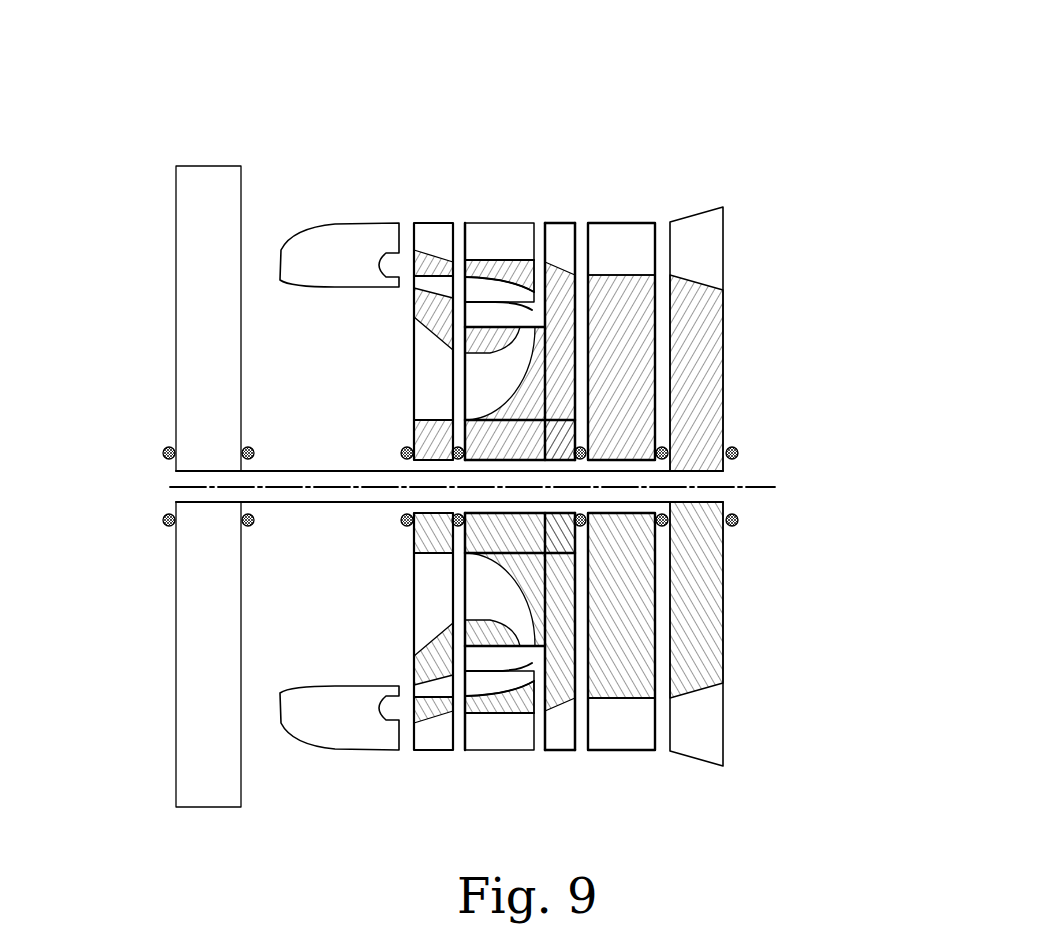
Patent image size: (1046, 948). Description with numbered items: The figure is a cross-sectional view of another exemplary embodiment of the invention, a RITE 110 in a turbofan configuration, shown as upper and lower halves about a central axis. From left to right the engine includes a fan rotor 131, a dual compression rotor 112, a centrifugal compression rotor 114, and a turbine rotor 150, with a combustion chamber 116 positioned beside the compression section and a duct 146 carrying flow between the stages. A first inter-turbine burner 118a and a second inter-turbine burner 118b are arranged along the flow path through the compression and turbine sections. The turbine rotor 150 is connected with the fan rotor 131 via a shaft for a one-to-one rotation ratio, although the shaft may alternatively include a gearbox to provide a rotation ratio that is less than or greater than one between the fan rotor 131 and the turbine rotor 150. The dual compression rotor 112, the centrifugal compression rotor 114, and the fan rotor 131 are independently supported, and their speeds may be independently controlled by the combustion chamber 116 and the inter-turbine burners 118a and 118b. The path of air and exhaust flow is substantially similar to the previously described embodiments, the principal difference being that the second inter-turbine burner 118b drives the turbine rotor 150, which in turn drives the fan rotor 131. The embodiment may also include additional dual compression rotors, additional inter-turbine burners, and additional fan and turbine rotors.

The RITE 110 is at (300, 96).
The fan rotor 131 is at (176, 324).
The combustion chamber 116 is at (308, 228).
The dual compression rotor 112 is at (444, 220).
The duct 146 is at (526, 265).
The first inter-turbine burner 118a is at (493, 230).
The second inter-turbine burner 118b is at (633, 752).
The centrifugal compression rotor 114 is at (571, 220).
The turbine rotor 150 is at (722, 208).